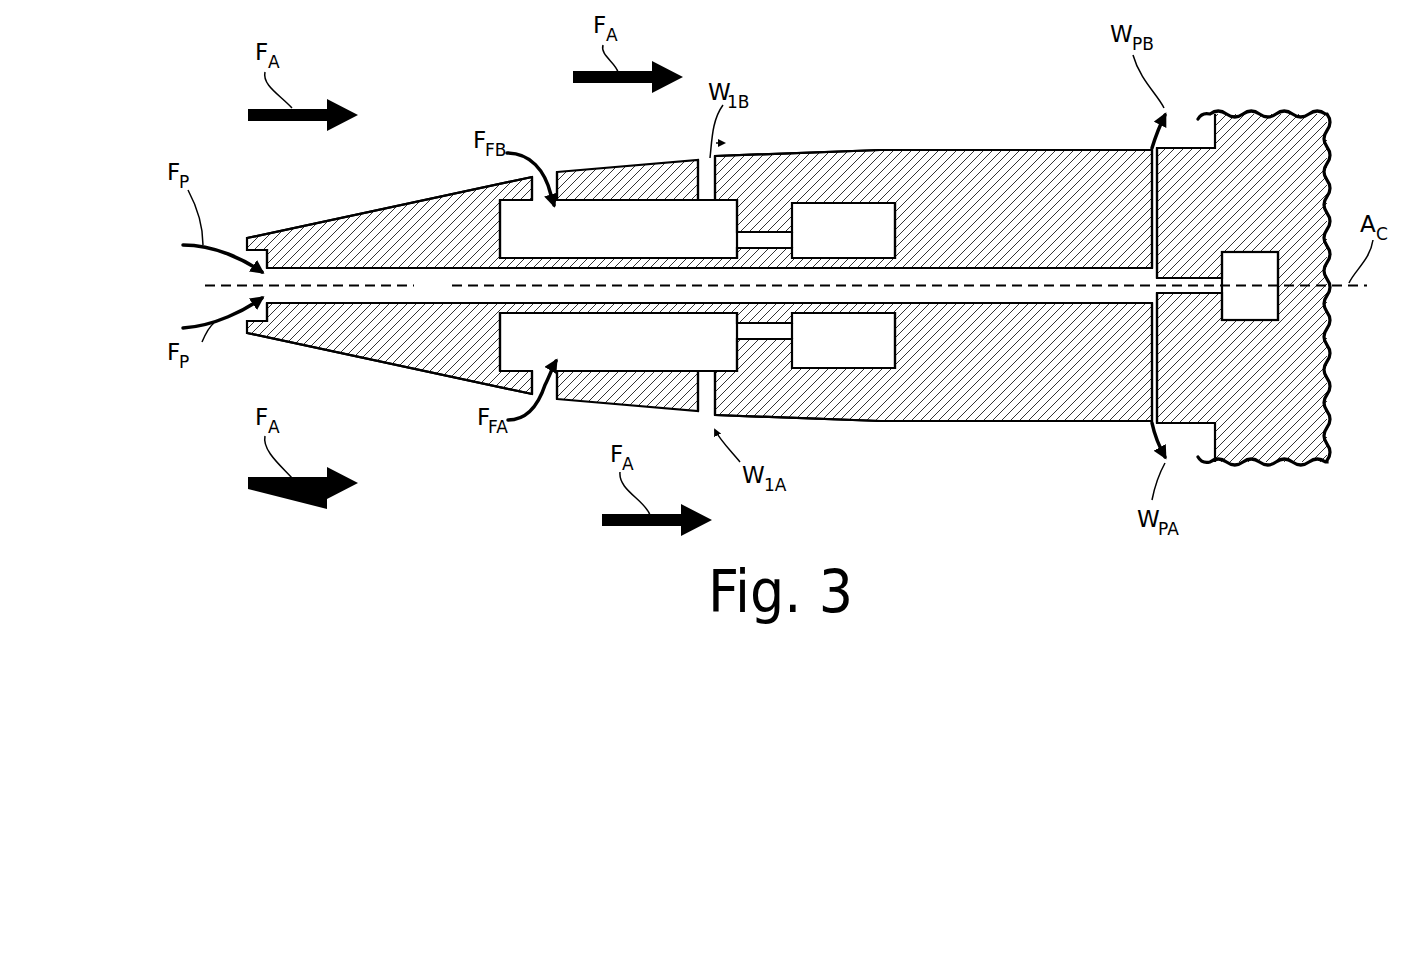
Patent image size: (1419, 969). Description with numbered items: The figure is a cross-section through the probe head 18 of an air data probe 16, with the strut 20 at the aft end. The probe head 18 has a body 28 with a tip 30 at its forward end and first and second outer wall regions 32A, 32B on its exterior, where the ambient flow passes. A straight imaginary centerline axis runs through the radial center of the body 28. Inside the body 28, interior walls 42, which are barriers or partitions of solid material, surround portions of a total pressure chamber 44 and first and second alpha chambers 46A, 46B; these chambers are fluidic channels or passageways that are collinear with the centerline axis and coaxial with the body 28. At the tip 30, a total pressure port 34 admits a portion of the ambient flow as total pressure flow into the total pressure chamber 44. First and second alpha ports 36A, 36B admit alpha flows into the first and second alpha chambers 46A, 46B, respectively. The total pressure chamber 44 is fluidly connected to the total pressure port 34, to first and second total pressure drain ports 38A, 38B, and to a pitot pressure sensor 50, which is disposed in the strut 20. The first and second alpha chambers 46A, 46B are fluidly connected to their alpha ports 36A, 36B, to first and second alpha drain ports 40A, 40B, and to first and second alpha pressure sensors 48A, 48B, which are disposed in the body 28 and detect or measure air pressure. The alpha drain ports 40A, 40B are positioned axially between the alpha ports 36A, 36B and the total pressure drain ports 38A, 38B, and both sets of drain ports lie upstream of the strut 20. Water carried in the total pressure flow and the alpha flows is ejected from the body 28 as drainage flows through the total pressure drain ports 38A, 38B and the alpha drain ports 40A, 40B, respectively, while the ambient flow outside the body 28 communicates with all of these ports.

The air data probe 16 is at (808, 99).
The probe head 18 is at (428, 170).
The strut 20 is at (1213, 138).
The body 28 is at (398, 378).
The tip 30 is at (287, 227).
The first outer wall region 32A is at (997, 425).
The second outer wall region 32B is at (998, 150).
The total pressure port 34 is at (250, 325).
The first alpha port 36A is at (555, 390).
The second alpha port 36B is at (552, 180).
The first total pressure drain port 38A is at (1152, 423).
The second total pressure drain port 38B is at (1152, 148).
The first alpha drain port 40A is at (700, 413).
The second alpha drain port 40B is at (698, 155).
The interior walls 42 is at (628, 257).
The total pressure chamber 44 is at (447, 297).
The first alpha chamber 46A is at (580, 353).
The second alpha chamber 46B is at (580, 247).
The first alpha pressure sensor 48A is at (838, 368).
The second alpha pressure sensor 48B is at (838, 203).
The pitot pressure sensor 50 is at (1280, 302).